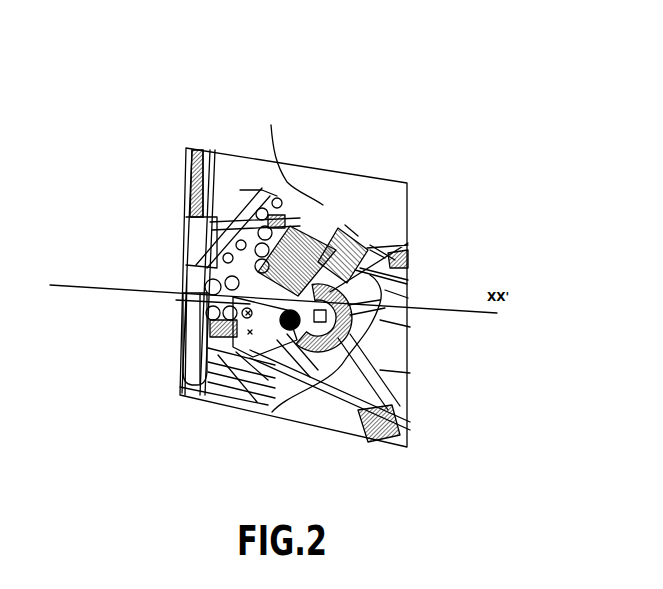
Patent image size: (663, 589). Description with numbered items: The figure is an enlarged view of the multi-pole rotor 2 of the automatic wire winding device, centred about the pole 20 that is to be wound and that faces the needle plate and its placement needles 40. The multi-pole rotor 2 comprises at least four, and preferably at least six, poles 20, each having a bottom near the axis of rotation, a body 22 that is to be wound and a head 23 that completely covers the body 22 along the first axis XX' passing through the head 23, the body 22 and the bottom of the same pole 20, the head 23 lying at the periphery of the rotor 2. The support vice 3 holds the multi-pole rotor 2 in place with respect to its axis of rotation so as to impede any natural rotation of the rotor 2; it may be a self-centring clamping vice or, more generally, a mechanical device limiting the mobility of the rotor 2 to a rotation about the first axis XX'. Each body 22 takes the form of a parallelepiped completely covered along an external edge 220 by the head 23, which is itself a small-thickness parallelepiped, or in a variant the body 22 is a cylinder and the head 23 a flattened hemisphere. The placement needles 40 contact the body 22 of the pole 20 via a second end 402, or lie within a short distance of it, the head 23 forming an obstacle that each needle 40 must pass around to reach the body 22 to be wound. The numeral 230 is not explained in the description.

The multi-pole rotor 2 is at (330, 193).
The support vice 3 is at (288, 300).
The pole 20 is at (186, 393).
The body 22 is at (257, 190).
The head 23 is at (362, 233).
The placement needle 40 is at (407, 237).
The external edge 220 is at (380, 300).
The actuator block 230 is at (338, 230).
The second end 402 is at (272, 412).